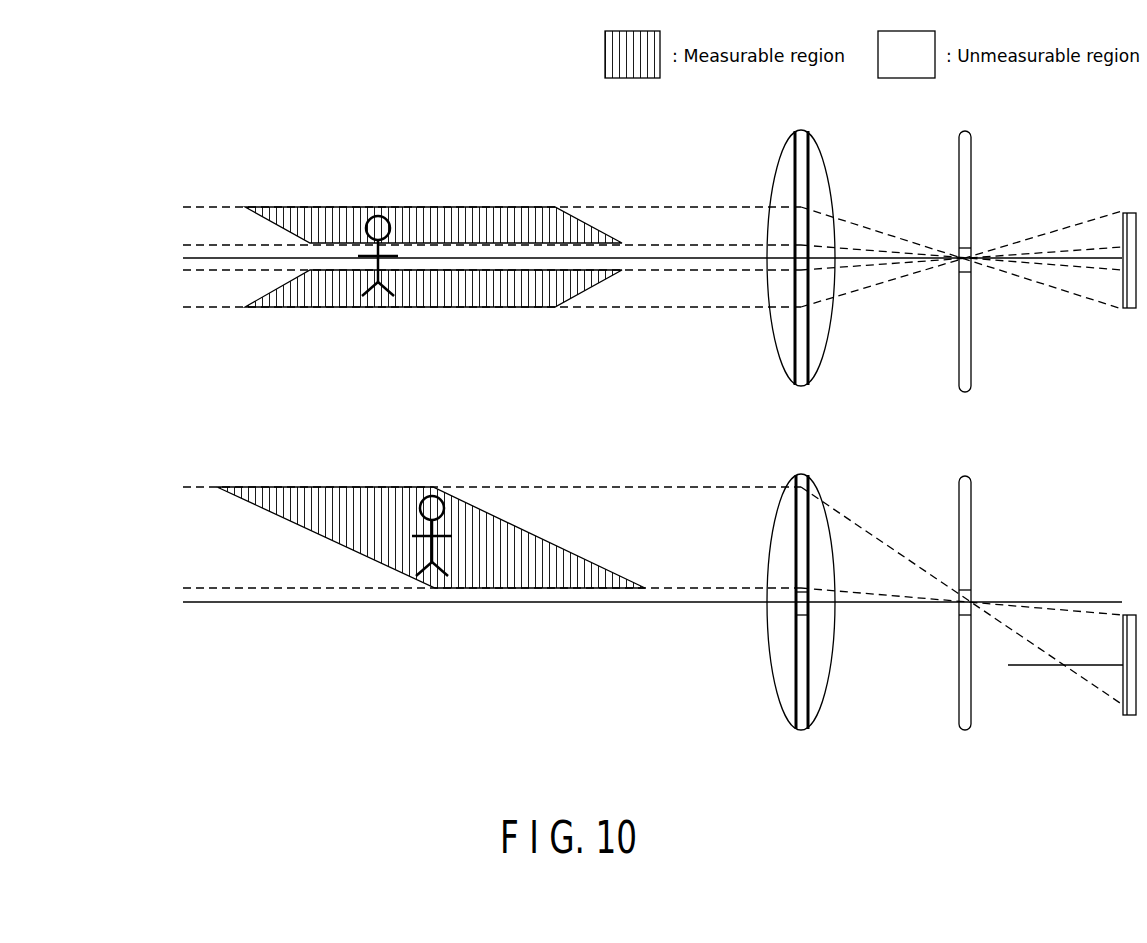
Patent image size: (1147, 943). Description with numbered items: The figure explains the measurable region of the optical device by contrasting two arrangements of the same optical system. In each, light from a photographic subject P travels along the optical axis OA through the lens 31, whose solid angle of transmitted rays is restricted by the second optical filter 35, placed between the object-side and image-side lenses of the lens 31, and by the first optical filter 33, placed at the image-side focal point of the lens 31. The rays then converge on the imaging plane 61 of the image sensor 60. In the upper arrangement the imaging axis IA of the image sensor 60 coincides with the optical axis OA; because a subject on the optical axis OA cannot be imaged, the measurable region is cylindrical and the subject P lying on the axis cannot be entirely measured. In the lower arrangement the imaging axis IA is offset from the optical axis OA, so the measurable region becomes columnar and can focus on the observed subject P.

The photographic subject P is at (380, 216).
The optical axis OA is at (206, 259).
The lens 31 is at (808, 157).
The second optical filter 35 is at (800, 387).
The first optical filter 33 is at (965, 392).
The image sensor 60 is at (1130, 309).
The imaging plane 61 is at (1123, 296).
The imaging axis IA is at (1027, 669).